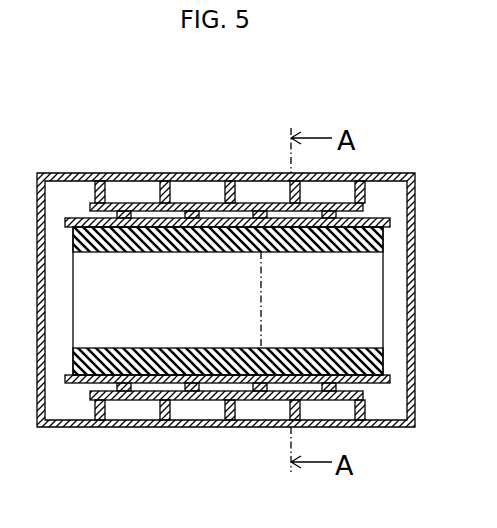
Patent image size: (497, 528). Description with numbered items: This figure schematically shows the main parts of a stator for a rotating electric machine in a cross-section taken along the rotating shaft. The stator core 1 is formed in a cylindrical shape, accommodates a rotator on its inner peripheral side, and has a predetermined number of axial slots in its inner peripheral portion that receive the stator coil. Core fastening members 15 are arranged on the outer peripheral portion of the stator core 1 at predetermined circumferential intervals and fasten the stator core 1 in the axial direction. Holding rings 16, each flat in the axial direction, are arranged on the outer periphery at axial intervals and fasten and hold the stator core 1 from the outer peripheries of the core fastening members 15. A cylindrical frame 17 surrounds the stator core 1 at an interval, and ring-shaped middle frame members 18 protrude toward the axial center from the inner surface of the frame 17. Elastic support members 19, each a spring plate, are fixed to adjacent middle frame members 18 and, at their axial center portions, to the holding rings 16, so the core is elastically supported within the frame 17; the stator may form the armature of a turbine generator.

The stator core 1 is at (383, 245).
The core fastening member 15 is at (75, 383).
The holding ring 16 is at (190, 388).
The frame 17 is at (188, 172).
The middle frame member 18 is at (93, 193).
The elastic support member 19 is at (147, 203).